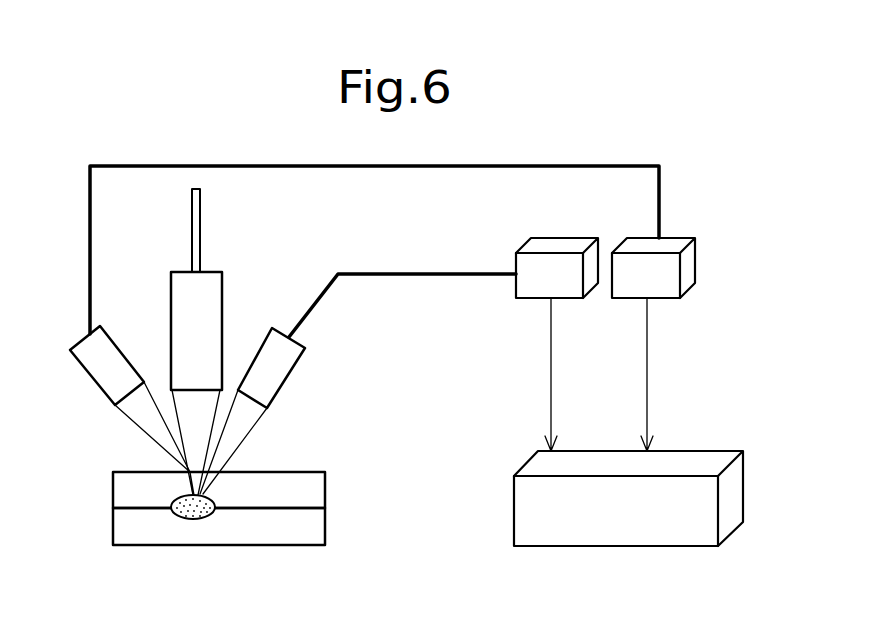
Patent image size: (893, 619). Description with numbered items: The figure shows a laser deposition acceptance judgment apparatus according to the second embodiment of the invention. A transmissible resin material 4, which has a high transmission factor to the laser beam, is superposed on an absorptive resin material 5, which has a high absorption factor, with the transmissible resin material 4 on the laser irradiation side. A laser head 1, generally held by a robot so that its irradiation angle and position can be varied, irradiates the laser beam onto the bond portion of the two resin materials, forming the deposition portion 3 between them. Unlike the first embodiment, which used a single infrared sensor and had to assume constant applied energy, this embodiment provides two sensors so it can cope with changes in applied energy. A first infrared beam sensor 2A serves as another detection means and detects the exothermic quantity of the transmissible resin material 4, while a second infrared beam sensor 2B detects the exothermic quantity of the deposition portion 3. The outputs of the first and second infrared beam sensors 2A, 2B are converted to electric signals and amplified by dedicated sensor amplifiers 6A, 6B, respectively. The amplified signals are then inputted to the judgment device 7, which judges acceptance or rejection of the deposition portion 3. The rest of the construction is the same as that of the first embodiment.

The laser head 1 is at (220, 283).
The first infrared beam sensor 2A is at (110, 338).
The second infrared beam sensor 2B is at (304, 362).
The deposition portion 3 is at (212, 497).
The transmissible resin material 4 is at (327, 491).
The absorptive resin material 5 is at (327, 528).
The sensor amplifier 6A is at (672, 238).
The sensor amplifier 6B is at (557, 236).
The judgment device 7 is at (672, 451).